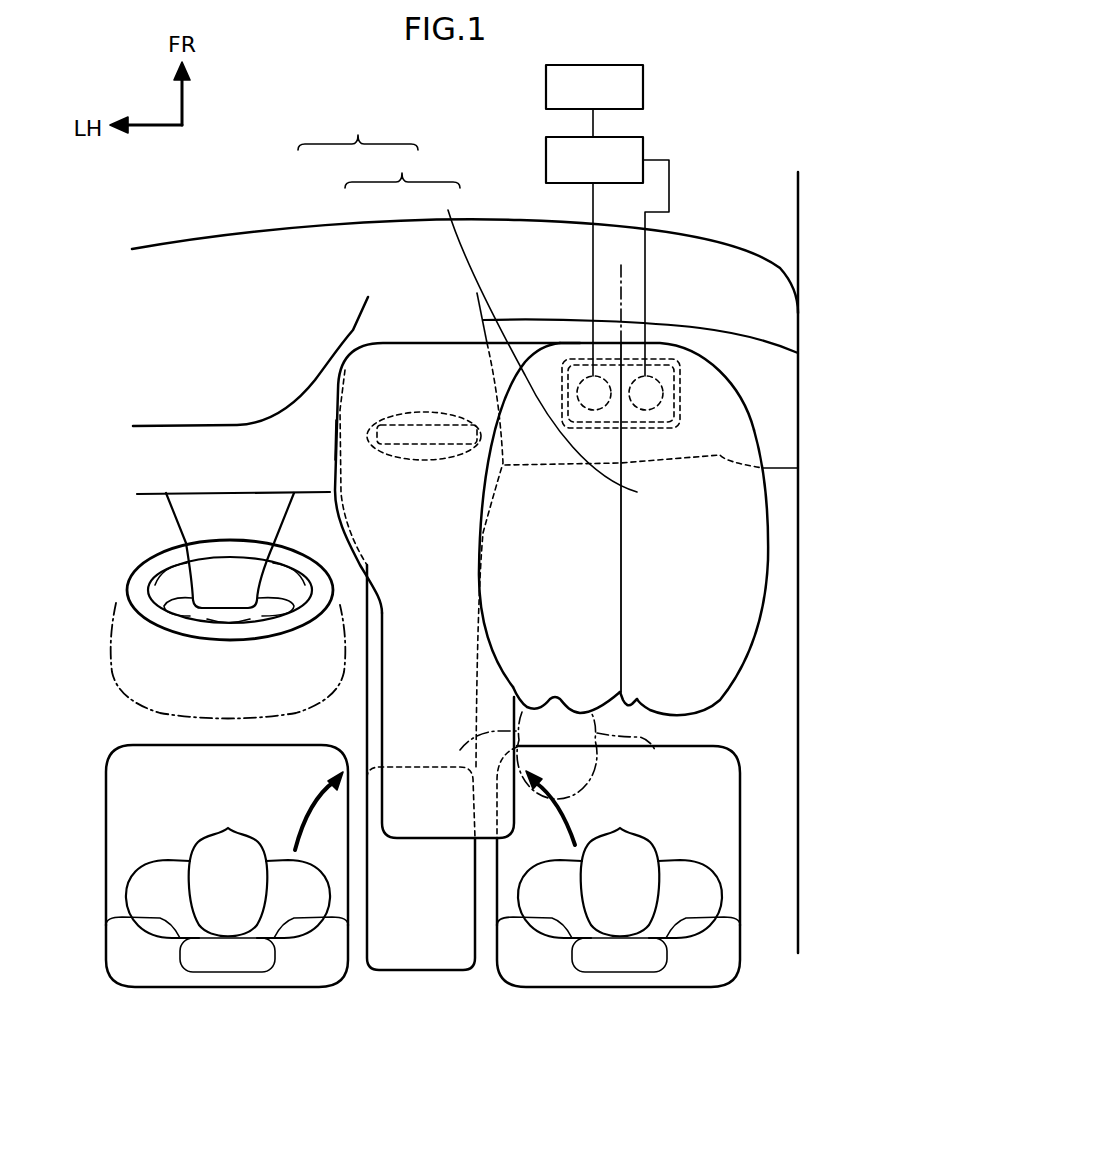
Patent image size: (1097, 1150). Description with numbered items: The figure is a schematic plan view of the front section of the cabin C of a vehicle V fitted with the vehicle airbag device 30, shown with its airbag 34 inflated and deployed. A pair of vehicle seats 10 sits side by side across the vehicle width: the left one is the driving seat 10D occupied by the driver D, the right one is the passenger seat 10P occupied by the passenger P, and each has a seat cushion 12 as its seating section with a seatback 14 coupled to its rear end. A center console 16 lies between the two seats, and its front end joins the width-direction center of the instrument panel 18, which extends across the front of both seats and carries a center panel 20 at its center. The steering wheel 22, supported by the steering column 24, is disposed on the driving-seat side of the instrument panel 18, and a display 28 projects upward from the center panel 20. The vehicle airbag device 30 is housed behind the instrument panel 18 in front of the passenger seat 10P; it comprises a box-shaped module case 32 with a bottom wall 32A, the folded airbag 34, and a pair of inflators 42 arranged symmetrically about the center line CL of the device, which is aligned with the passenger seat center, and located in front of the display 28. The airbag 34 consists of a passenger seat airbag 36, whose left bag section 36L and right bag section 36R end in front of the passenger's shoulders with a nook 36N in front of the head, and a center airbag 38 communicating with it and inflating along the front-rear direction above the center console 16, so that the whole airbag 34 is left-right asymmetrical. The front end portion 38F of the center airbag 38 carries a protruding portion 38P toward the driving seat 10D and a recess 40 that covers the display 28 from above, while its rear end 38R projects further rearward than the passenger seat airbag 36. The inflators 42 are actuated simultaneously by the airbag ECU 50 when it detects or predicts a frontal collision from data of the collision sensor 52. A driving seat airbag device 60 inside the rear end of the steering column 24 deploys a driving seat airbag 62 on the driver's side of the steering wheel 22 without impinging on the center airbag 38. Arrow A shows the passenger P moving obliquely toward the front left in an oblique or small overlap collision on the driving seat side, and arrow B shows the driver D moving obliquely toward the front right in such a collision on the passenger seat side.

The vehicle seat 10 is at (424, 952).
The driving seat 10D is at (218, 1004).
The passenger seat 10P is at (618, 1008).
The seat cushion 12 is at (105, 812).
The seatback 14 is at (135, 988).
The center console 16 is at (365, 698).
The instrument panel 18 is at (217, 255).
The center panel 20 is at (382, 325).
The steering wheel 22 is at (140, 582).
The steering column 24 is at (170, 530).
The display 28 is at (375, 433).
The vehicle airbag device 30 is at (697, 320).
The module case 32 is at (683, 394).
The bottom wall 32A is at (683, 410).
The airbag 34 is at (358, 130).
The passenger seat airbag 36 is at (549, 429).
The left bag section 36L is at (415, 368).
The right bag section 36R is at (527, 443).
The nook 36N is at (632, 705).
The center airbag 38 is at (377, 377).
The front end portion 38F is at (353, 333).
The protruding portion 38P is at (335, 433).
The rear end 38R is at (428, 838).
The recess 40 is at (400, 418).
The inflator 42 is at (598, 410).
The airbag ECU 50 is at (546, 160).
The collision sensor 52 is at (546, 88).
The driving seat airbag device 60 is at (206, 668).
The driving seat airbag 62 is at (118, 677).
The vehicle V is at (733, 106).
The center line CL is at (615, 300).
The cabin C is at (780, 693).
The driver D is at (163, 862).
The passenger P is at (640, 737).
The arrow A is at (570, 830).
The arrow B is at (320, 812).